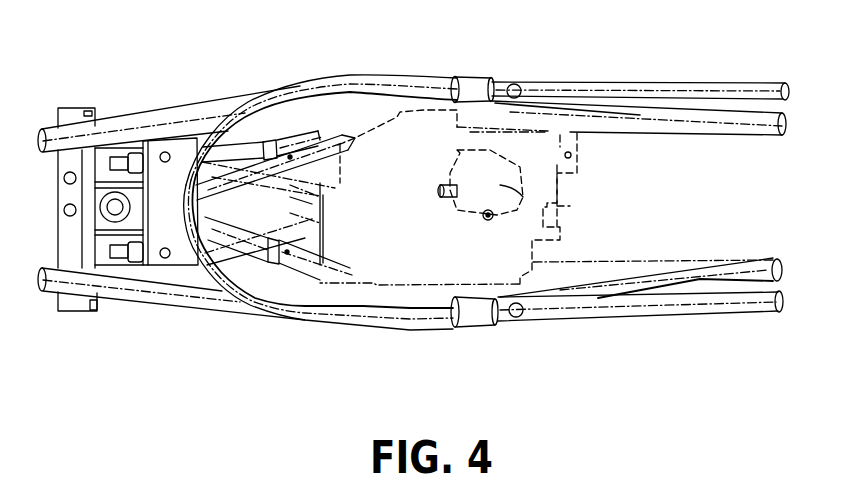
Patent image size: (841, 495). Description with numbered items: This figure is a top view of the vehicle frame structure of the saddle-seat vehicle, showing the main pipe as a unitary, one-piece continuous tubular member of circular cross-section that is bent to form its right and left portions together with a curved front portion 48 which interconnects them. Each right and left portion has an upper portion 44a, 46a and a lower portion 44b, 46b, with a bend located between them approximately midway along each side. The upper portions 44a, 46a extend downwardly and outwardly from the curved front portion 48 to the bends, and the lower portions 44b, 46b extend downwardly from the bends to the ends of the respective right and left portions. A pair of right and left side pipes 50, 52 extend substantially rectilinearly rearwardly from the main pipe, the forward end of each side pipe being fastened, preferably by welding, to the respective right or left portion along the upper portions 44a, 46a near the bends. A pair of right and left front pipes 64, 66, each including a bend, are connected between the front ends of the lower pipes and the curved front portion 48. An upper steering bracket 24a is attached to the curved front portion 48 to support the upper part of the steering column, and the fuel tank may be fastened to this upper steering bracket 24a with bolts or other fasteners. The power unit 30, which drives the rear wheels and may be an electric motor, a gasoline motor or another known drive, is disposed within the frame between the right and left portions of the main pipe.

The upper portion 44a is at (315, 92).
The lower portion 44b is at (725, 118).
The upper portion 46a is at (325, 318).
The lower portion 46b is at (693, 278).
The right side pipe 50 is at (625, 93).
The left side pipe 52 is at (653, 303).
The right front pipe 64 is at (127, 123).
The left front pipe 66 is at (100, 283).
The upper steering bracket 24a is at (157, 247).
The curved front portion 48 is at (200, 250).
The power unit 30 is at (560, 203).